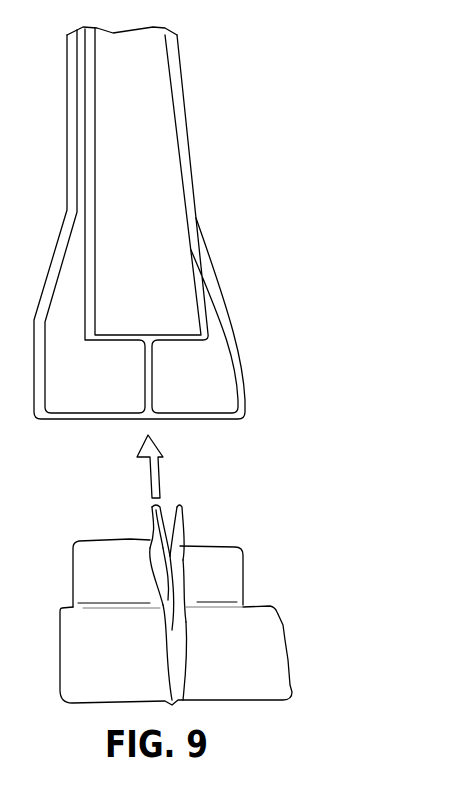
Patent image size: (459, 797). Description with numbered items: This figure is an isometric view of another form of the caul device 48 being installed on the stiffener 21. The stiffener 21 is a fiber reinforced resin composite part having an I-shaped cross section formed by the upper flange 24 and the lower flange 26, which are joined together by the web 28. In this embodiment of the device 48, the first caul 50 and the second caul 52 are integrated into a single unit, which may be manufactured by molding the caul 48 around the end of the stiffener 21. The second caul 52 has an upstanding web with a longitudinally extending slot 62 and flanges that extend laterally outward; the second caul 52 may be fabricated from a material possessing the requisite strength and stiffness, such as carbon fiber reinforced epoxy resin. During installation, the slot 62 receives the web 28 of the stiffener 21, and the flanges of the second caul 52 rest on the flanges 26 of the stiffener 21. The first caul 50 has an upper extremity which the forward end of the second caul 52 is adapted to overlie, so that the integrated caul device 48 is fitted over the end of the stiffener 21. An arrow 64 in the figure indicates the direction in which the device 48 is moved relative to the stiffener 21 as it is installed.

The stiffener 21 is at (212, 141).
The upper flange 24 is at (117, 127).
The lower flange 26 is at (207, 390).
The web 28 is at (145, 380).
The caul device 48 is at (316, 652).
The first caul 50 is at (257, 683).
The second caul 52 is at (223, 573).
The slot 62 is at (180, 534).
The insertion direction arrow 64 is at (162, 472).